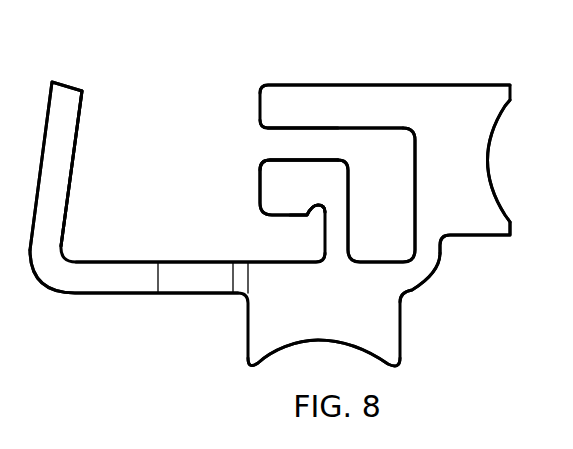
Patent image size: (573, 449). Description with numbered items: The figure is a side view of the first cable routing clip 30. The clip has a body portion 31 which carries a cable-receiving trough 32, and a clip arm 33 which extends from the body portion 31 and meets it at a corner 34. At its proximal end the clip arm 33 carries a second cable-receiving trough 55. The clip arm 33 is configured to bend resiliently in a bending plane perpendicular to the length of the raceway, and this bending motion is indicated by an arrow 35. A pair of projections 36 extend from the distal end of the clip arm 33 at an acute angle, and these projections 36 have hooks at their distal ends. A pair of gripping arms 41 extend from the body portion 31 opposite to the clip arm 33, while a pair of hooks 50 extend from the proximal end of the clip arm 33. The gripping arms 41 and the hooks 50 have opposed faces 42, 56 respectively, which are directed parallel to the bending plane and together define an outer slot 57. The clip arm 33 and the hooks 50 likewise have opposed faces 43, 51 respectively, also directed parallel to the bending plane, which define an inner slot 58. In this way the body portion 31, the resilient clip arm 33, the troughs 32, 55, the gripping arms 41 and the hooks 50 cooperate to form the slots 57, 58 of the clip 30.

The cable routing clip 30 is at (92, 357).
The body portion 31 is at (466, 258).
The cable-receiving trough 32 is at (488, 163).
The clip arm 33 is at (193, 295).
The corner 34 is at (418, 290).
The arrow 35 is at (134, 250).
The projections 36 is at (65, 82).
The gripping arms 41 is at (329, 85).
The opposed face of gripping arm 42 is at (370, 128).
The opposed face of clip arm 43 is at (392, 260).
The hooks 50 is at (260, 172).
The opposed face of hook 51 is at (278, 213).
The second cable-receiving trough 55 is at (316, 341).
The opposed face of hook 56 is at (296, 160).
The outer slot 57 is at (78, 137).
The inner slot 58 is at (236, 248).